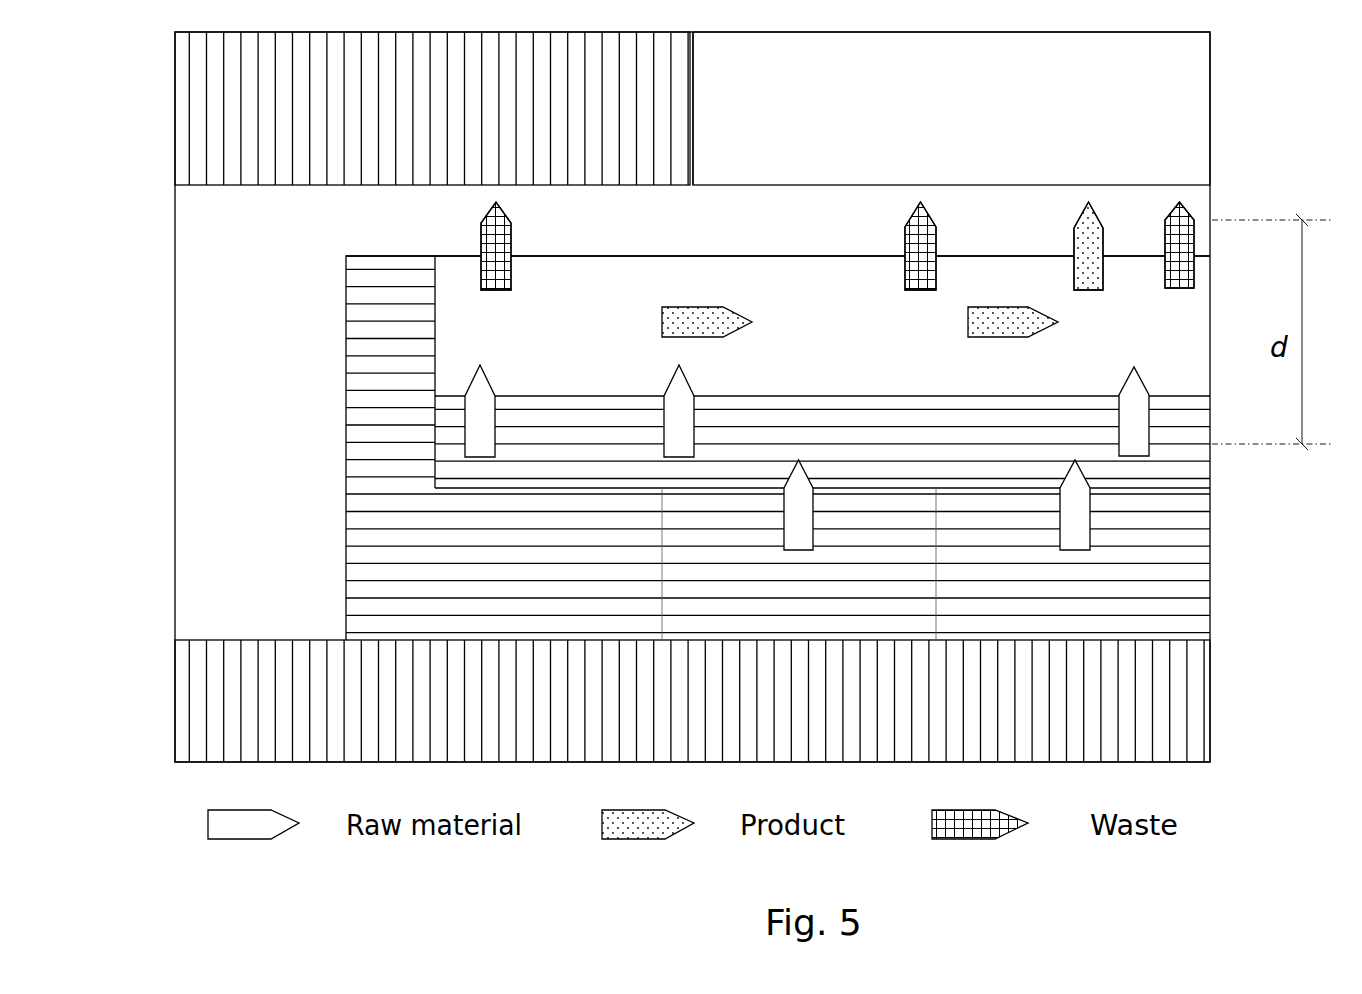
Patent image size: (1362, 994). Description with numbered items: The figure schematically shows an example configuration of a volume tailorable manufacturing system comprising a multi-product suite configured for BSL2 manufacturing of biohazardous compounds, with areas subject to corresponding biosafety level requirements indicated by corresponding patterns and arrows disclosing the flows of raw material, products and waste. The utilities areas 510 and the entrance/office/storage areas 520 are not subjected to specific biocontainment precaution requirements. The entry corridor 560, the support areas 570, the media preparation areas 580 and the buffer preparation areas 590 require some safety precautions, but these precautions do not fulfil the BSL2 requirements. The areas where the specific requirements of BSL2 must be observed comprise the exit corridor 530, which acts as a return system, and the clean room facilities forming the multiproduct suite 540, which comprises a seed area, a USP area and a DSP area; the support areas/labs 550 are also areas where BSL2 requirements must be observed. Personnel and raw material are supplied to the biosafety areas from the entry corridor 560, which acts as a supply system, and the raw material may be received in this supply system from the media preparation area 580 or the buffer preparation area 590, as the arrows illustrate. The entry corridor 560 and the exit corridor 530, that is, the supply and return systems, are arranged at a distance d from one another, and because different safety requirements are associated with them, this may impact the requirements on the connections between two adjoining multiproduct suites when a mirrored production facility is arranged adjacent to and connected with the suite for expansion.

The utilities areas 510 is at (216, 103).
The entrance/office/storage areas 520 is at (216, 693).
The exit corridor 530 is at (1198, 211).
The multiproduct suite 540 is at (1190, 360).
The support areas/labs 550 is at (1187, 62).
The entry corridor 560 is at (1188, 449).
The support areas 570 is at (366, 520).
The media preparation areas 580 is at (843, 590).
The buffer preparation areas 590 is at (1188, 556).